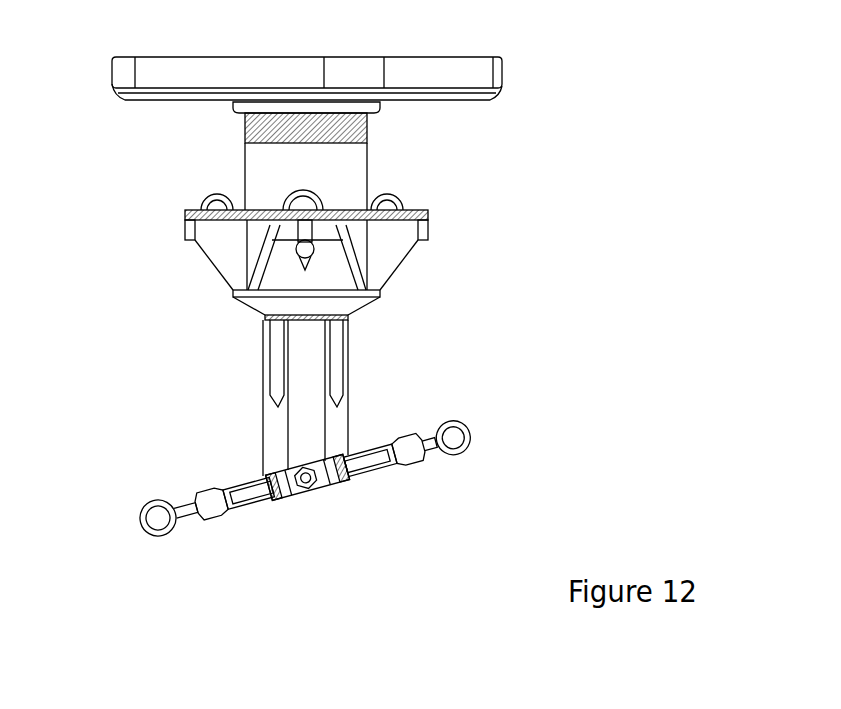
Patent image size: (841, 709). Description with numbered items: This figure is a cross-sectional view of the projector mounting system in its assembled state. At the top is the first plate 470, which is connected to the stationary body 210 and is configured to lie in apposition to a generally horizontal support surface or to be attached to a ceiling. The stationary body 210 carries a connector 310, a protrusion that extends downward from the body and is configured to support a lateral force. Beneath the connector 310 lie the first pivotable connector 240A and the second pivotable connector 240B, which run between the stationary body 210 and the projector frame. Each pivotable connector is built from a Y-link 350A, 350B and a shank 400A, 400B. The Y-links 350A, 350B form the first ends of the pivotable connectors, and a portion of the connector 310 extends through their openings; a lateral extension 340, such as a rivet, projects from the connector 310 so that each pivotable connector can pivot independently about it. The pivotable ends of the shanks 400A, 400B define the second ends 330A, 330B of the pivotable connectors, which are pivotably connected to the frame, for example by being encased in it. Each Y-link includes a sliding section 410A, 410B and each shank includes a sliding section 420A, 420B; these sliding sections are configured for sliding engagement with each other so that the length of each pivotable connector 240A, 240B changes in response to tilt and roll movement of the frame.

The first plate 470 is at (483, 58).
The stationary body 210 is at (507, 113).
The connector 310 is at (352, 366).
The lateral extension 340 is at (305, 490).
The second end of first pivotable connector 330A is at (464, 427).
The second end of second pivotable connector 330B is at (140, 513).
The sliding section of shank 420A is at (430, 430).
The sliding section of shank 420B is at (183, 503).
The Y-link 350A is at (364, 452).
The Y-link 350B is at (240, 480).
The sliding section of Y-link 410A is at (410, 467).
The sliding section of Y-link 410B is at (203, 505).
The shank 400A is at (467, 499).
The shank 400B is at (174, 489).
The first pivotable connector 240A is at (427, 453).
The second pivotable connector 240B is at (187, 508).